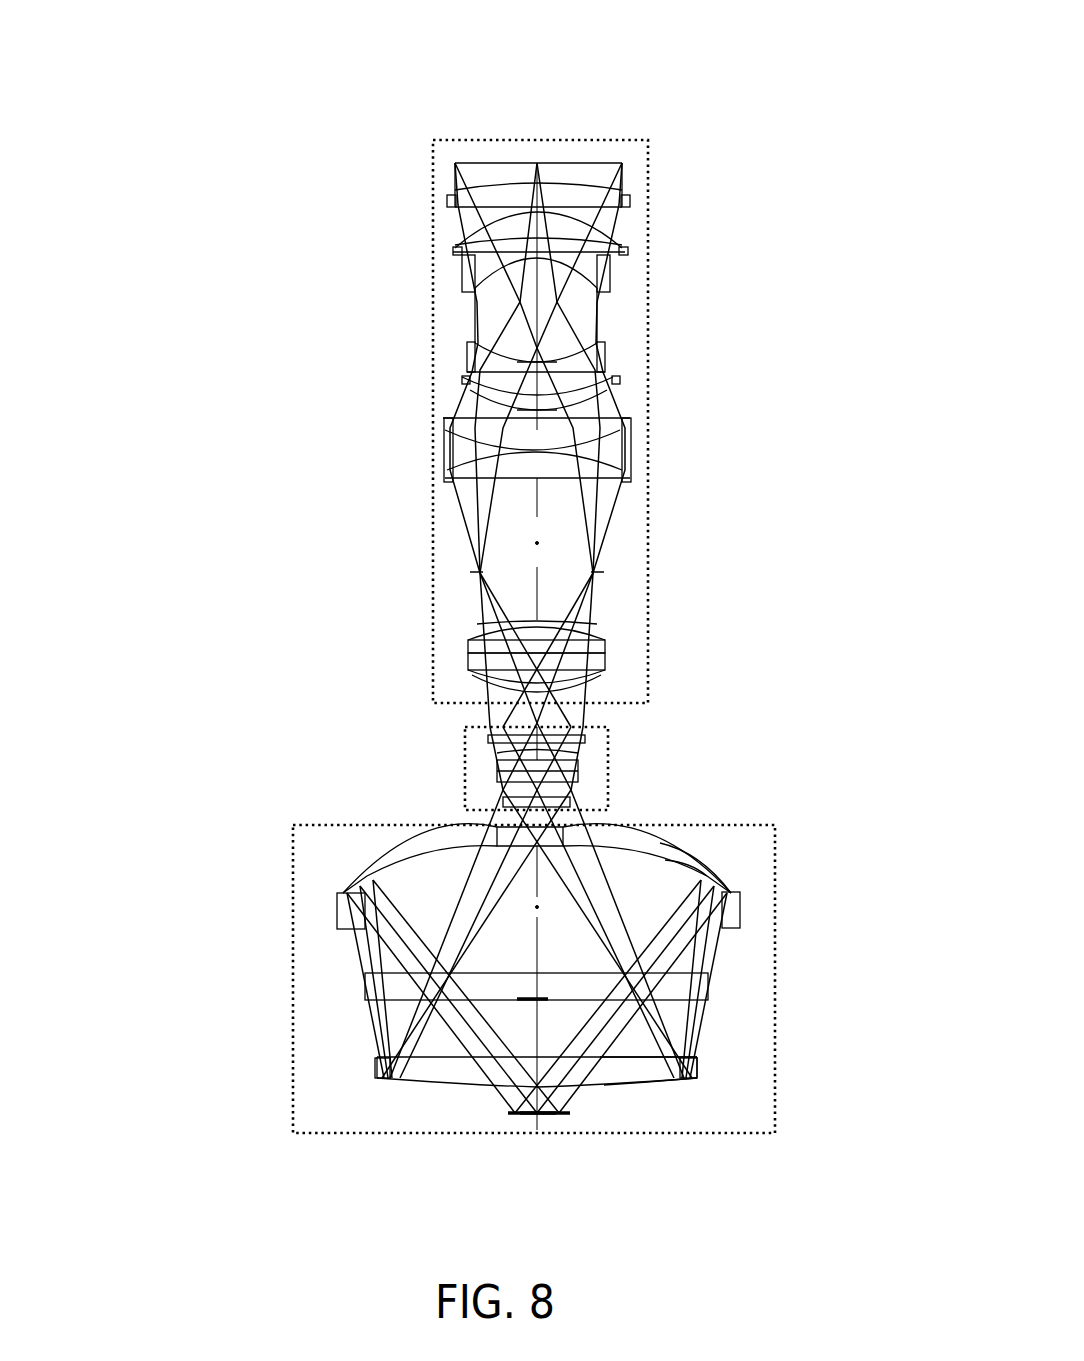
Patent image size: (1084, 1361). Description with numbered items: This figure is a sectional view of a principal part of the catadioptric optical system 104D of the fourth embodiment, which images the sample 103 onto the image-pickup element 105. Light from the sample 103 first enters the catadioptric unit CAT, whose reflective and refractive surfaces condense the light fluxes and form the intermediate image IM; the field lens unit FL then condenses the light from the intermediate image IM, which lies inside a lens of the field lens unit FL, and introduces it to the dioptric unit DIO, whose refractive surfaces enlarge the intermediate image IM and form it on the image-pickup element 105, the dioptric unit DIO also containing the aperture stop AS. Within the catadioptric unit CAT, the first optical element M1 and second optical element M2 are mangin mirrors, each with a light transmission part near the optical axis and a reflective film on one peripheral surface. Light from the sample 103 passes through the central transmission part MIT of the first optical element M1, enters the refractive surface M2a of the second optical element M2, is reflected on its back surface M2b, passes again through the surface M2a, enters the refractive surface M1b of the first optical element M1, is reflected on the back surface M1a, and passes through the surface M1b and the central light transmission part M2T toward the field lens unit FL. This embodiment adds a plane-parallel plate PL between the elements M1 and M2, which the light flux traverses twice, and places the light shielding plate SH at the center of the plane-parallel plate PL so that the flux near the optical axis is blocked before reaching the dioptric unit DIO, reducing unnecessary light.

The catadioptric optical system 104D is at (560, 38).
The image-pickup element 105 is at (457, 163).
The sample 103 is at (552, 1118).
The dioptric unit DIO is at (497, 363).
The aperture stop AS is at (474, 572).
The intermediate image IM is at (537, 790).
The field lens unit FL is at (476, 708).
The catadioptric unit CAT is at (500, 967).
The light shielding plate SH is at (545, 999).
The second optical element M2 is at (357, 887).
The light transmission part M2T is at (597, 848).
The refractive surface M2a is at (678, 893).
The back surface M2b is at (707, 868).
The plane-parallel plate PL is at (357, 982).
The first optical element M1 is at (380, 1073).
The back surface M1a is at (657, 1083).
The refractive surface M1b is at (627, 1057).
The central mirror / intermediate mirror MIT is at (498, 1088).